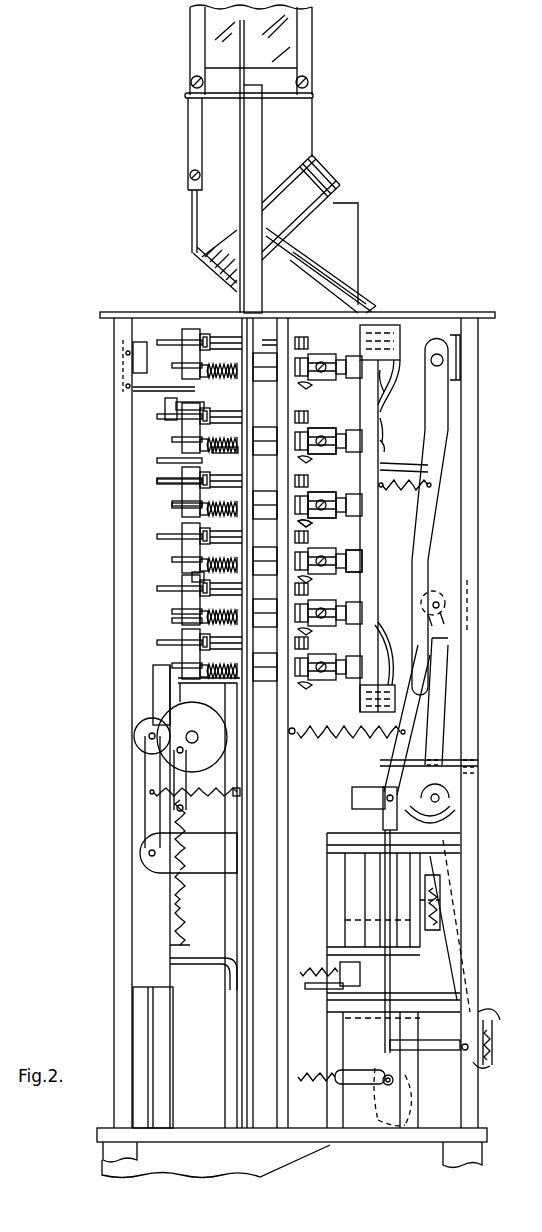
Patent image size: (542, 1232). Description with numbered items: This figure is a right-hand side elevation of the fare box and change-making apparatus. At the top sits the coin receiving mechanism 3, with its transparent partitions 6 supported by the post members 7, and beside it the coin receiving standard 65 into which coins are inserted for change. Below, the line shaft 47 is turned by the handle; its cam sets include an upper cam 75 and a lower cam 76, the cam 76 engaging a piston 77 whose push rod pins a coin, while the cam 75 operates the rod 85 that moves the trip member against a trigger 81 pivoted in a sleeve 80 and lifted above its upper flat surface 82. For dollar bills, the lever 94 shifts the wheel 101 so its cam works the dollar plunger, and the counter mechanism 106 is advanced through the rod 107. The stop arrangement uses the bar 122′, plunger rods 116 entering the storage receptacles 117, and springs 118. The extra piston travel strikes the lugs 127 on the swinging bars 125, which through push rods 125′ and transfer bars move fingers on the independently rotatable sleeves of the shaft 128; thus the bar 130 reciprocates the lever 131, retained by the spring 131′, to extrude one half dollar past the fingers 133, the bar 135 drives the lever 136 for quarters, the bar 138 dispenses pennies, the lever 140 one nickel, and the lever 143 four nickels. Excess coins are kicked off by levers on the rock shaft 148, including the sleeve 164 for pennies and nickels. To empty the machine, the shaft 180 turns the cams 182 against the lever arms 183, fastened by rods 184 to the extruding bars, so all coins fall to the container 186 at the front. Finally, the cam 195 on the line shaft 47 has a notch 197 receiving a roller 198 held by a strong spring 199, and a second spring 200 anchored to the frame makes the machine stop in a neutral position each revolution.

The coin receiving mechanism 3 is at (308, 38).
The transparent partitions 6 is at (215, 50).
The post members 7 is at (308, 70).
The coin receiving standard 65 is at (262, 145).
The rod 85 is at (262, 345).
The counter mechanism 106 is at (124, 358).
The rod 107 is at (134, 388).
The lever 94 is at (174, 407).
The wheel 101 is at (205, 404).
The bars 125 is at (372, 408).
The sleeve 80 is at (306, 436).
The upper flat surface 82 is at (308, 497).
The trigger 81 is at (304, 526).
The lugs 127 is at (348, 566).
The bar 135 is at (384, 402).
The bar 138 is at (380, 415).
The lever 140 is at (380, 425).
The lever 143 is at (383, 438).
The bar 130 is at (372, 458).
The bar 122′ is at (226, 452).
The cam 75 is at (157, 481).
The cam 76 is at (170, 505).
The piston 77 is at (205, 620).
The push rods 125′ is at (404, 488).
The rock shaft 148 is at (440, 618).
The shaft 128 is at (440, 798).
The line shaft 47 is at (180, 725).
The cam 195 is at (202, 727).
The roller 198 is at (140, 736).
The notch 197 is at (197, 779).
The spring 131′ is at (349, 738).
The spring 199 is at (184, 806).
The sleeve 164 is at (330, 836).
The spring 200 is at (183, 904).
The storage receptacles 117 is at (420, 888).
The lever 131 is at (422, 928).
The springs 118 is at (306, 970).
The plunger rods 116 is at (302, 986).
The rods 184 is at (482, 1002).
The lever arms 183 is at (389, 1044).
The shaft 180 is at (386, 1068).
The fingers 133 is at (493, 1050).
The lever 136 is at (480, 1065).
The cams 182 is at (388, 1113).
The container 186 is at (330, 1143).